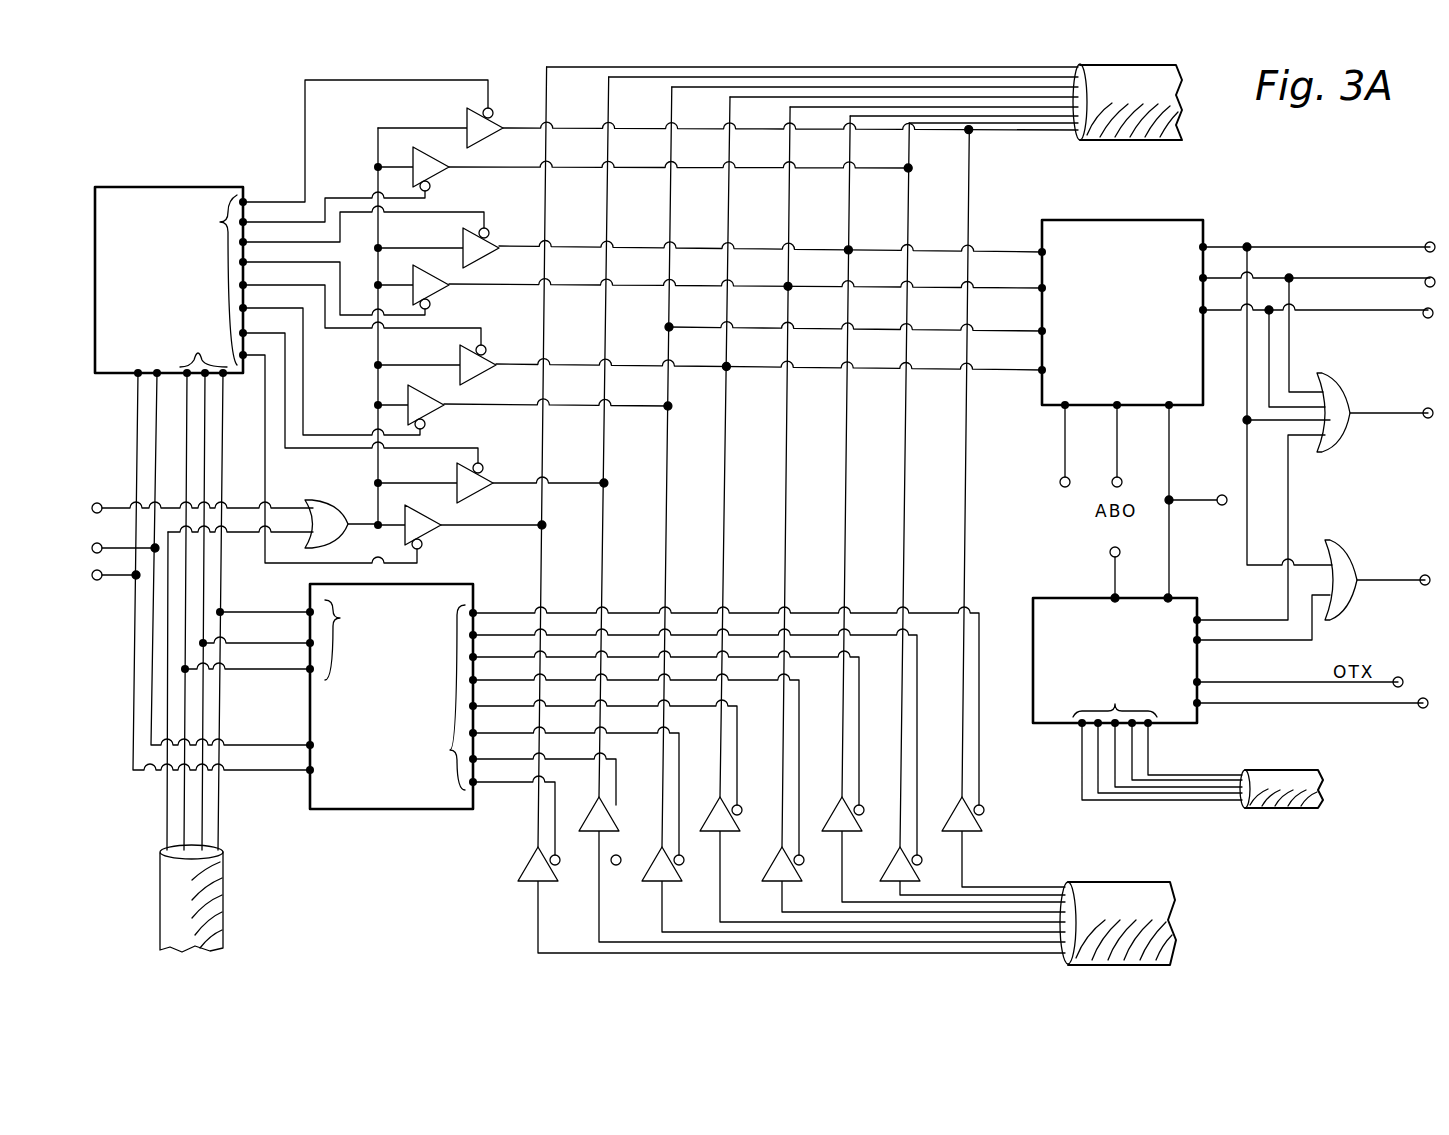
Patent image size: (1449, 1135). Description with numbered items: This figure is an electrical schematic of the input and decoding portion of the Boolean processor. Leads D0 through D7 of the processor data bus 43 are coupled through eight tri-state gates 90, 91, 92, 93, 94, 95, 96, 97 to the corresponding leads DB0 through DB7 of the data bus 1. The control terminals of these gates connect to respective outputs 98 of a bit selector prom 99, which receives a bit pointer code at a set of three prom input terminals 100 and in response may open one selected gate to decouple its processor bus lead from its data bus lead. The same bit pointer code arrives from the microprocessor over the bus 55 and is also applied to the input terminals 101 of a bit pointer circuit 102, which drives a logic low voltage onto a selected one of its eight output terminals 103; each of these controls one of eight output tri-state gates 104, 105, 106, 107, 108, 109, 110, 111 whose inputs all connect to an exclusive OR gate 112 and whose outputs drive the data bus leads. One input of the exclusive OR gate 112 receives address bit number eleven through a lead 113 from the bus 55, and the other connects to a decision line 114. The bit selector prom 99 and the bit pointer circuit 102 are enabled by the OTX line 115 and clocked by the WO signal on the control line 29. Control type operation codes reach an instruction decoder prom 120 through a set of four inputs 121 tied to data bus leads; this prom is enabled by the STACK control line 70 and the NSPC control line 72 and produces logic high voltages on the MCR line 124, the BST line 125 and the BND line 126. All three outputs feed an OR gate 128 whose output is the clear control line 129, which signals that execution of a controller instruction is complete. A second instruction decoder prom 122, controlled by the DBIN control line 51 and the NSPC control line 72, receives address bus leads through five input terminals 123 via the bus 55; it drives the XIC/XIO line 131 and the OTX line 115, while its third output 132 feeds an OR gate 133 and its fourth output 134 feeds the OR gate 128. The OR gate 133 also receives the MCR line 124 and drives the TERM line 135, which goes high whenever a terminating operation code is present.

The data bus 1 is at (1127, 102).
The WO control line 29 is at (97, 580).
The processor data bus 43 is at (1135, 914).
The DBIN control line 51 is at (1110, 550).
The bus 55 is at (1305, 812).
The STACK control line 70 is at (1056, 482).
The NSPC control line 72 is at (1222, 506).
The tri-state gate 90 is at (525, 856).
The tri-state gate 91 is at (592, 810).
The tri-state gate 92 is at (650, 858).
The tri-state gate 93 is at (710, 812).
The tri-state gate 94 is at (772, 858).
The tri-state gate 95 is at (832, 812).
The tri-state gate 96 is at (890, 860).
The tri-state gate 97 is at (954, 812).
The outputs 98 is at (439, 697).
The bit selector prom 99 is at (374, 814).
The prom input terminals 100 is at (280, 687).
The input terminals 101 is at (221, 589).
The bit pointer circuit 102 is at (196, 185).
The output terminals 103 is at (332, 321).
The output tri-state gate 104 is at (430, 540).
The output tri-state gate 105 is at (474, 493).
The output tri-state gate 106 is at (432, 418).
The output tri-state gate 107 is at (476, 376).
The output tri-state gate 108 is at (436, 298).
The output tri-state gate 109 is at (478, 258).
The output tri-state gate 110 is at (436, 180).
The output tri-state gate 111 is at (482, 140).
The exclusive OR gate 112 is at (340, 482).
The lead 113 is at (165, 820).
The decision line 114 is at (98, 502).
The OTX line 115 is at (96, 543).
The instruction decoder prom 120 is at (1157, 208).
The inputs 121 is at (1038, 286).
The instruction decoder prom 122 is at (1030, 608).
The input terminals 123 is at (1157, 740).
The MCR line 124 is at (1422, 240).
The BST line 125 is at (1430, 278).
The BND line 126 is at (1426, 318).
The OR gate 128 is at (1338, 378).
The clear control line 129 is at (1424, 420).
The XIC/XIO line 131 is at (1423, 710).
The third output 132 is at (1200, 642).
The OR gate 133 is at (1345, 548).
The fourth output 134 is at (1200, 618).
The TERM line 135 is at (1422, 574).